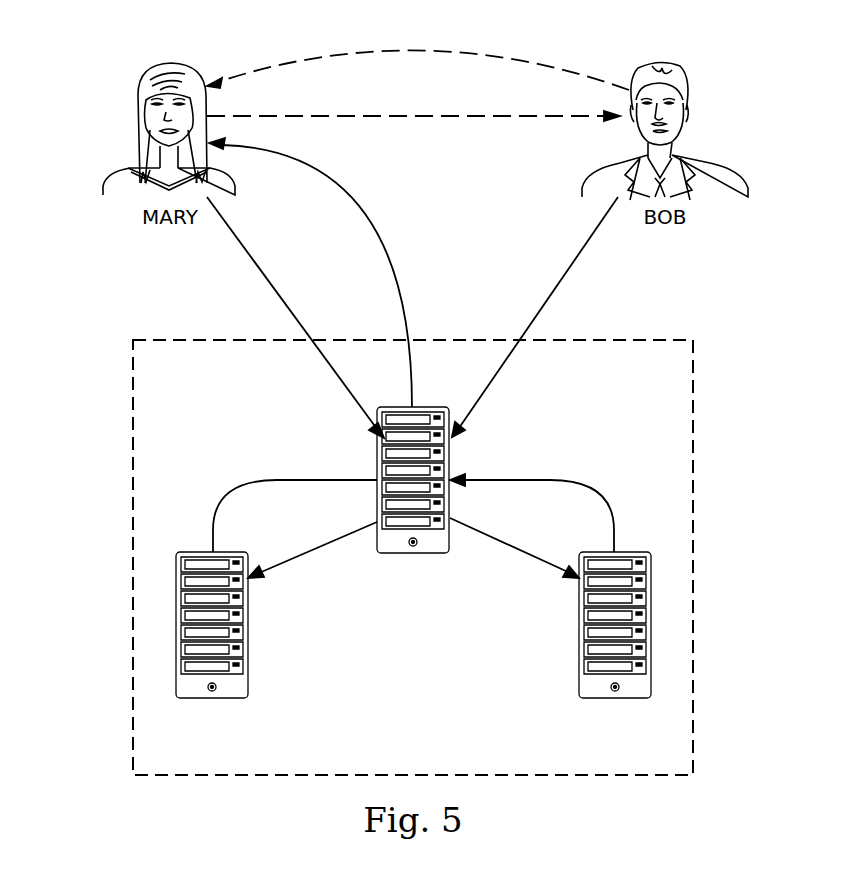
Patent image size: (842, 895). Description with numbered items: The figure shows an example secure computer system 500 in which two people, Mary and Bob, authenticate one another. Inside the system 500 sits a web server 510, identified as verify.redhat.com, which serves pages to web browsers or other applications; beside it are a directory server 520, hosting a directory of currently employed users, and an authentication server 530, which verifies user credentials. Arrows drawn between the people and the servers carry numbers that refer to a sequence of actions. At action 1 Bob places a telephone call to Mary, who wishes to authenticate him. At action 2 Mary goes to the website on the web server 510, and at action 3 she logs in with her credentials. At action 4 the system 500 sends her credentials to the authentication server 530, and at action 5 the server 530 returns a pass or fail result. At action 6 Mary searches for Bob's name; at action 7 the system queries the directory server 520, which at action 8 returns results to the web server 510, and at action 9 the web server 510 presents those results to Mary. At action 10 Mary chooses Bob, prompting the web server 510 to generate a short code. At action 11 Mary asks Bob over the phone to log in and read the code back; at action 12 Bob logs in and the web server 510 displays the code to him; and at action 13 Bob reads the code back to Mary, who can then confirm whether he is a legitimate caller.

The action of Bob placing a telephone call to Mary 1 is at (418, 54).
The action of Bob reading the code back to Mary 13 is at (418, 54).
The action of Mary asking Bob to log in and read the code 11 is at (413, 105).
The action of Mary going to the website 2 is at (266, 317).
The action of Mary logging in 3 is at (266, 317).
The action of Mary searching for Bob's name 6 is at (266, 317).
The action of Mary choosing the person to authenticate 10 is at (266, 317).
The action of presenting search results to Mary 9 is at (310, 272).
The action of Bob logging in 12 is at (535, 317).
The action of directory server returning results 8 is at (295, 502).
The action of querying the directory 7 is at (312, 548).
The action of returning a pass/fail authentication result 5 is at (532, 502).
The action of checking Mary's credentials 4 is at (514, 548).
The system 500 is at (133, 557).
The web server 510 is at (434, 407).
The directory server 520 is at (206, 699).
The authentication server 530 is at (620, 699).